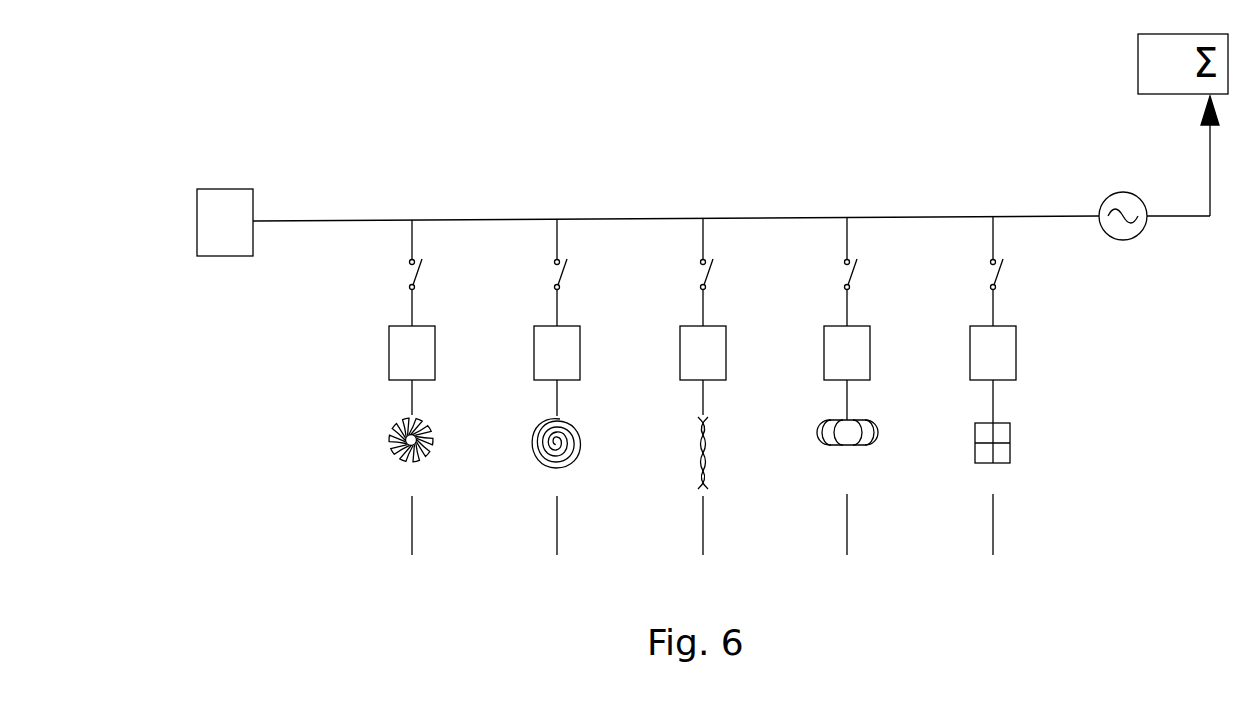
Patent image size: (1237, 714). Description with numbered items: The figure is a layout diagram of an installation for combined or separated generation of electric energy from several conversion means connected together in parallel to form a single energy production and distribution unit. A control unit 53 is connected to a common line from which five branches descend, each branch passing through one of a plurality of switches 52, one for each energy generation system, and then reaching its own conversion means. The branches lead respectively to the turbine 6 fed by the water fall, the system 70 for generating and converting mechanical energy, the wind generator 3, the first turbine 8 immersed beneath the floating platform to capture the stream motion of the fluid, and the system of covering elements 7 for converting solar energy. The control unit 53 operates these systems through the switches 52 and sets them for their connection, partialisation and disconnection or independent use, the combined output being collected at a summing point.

The control unit 53 is at (195, 210).
The switch 52 is at (408, 276).
The turbine 6 is at (393, 455).
The system for generating and converting mechanical energy 70 is at (532, 455).
The wind generator 3 is at (693, 455).
The first turbine 8 is at (815, 437).
The system of covering elements 7 is at (973, 437).